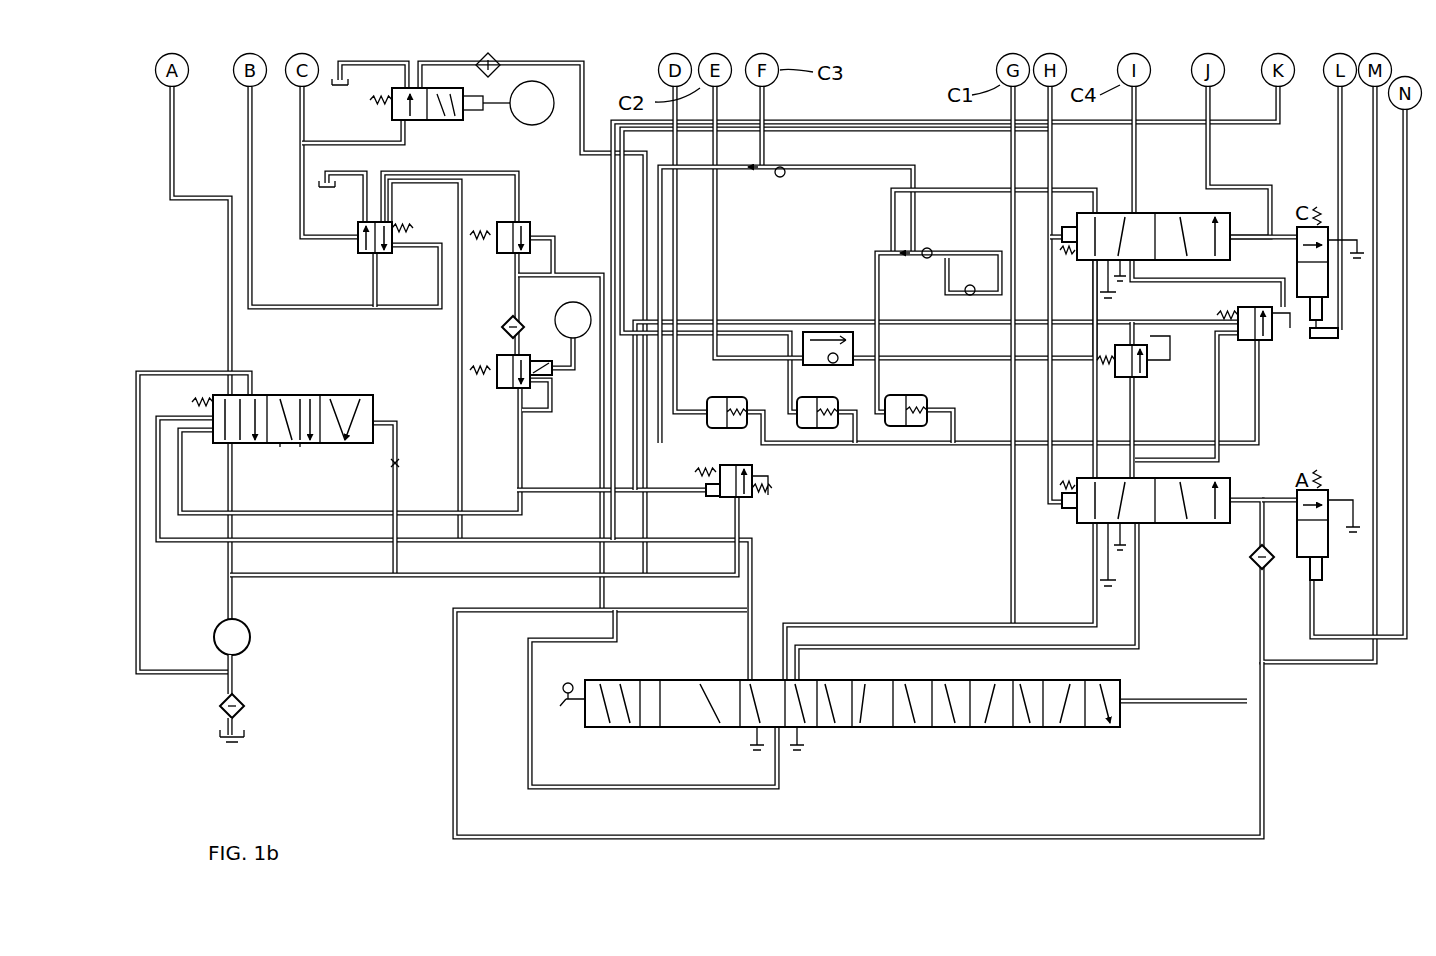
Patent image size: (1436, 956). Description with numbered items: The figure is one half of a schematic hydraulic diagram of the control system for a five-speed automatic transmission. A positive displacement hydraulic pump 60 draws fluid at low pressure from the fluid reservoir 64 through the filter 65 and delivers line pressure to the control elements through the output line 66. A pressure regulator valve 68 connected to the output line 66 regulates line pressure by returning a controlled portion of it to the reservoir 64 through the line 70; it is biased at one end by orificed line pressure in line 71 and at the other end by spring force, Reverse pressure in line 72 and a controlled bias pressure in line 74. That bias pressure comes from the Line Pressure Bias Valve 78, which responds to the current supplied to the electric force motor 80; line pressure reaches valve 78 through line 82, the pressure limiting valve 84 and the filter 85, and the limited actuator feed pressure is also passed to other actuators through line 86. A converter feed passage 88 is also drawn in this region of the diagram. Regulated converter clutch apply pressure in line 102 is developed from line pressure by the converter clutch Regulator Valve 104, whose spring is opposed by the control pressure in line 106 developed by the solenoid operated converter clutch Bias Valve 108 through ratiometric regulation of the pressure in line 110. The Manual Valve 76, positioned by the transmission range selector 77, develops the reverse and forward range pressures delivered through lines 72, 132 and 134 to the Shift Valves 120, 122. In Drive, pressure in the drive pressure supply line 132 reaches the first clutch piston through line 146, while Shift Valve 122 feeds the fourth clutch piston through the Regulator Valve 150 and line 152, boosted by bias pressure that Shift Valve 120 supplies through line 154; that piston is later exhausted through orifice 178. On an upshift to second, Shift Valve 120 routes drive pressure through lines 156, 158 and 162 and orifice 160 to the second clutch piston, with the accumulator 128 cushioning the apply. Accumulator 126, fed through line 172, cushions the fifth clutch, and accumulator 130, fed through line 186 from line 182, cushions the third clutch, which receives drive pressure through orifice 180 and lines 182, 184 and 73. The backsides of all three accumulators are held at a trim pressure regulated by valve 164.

The positive displacement hydraulic pump 60 is at (250, 637).
The fluid reservoir 64 is at (236, 740).
The filter 65 is at (246, 706).
The output line 66 is at (350, 603).
The pressure regulator valve 68 is at (295, 445).
The line 70 is at (140, 585).
The line 71 is at (383, 410).
The line 72 is at (292, 537).
The line 73 is at (765, 102).
The line 74 is at (330, 507).
The Manual Valve 76 is at (920, 727).
The transmission range selector 77 is at (557, 710).
The Line Pressure Bias Valve 78 is at (505, 390).
The electric force motor 80 is at (572, 372).
The line 82 is at (458, 343).
The pressure limiting valve 84 is at (507, 257).
The filter 85 is at (500, 328).
The line 86 is at (453, 700).
The converter feed passage 88 is at (227, 281).
The line 102 is at (245, 150).
The TCC Regulator Valve 104 is at (367, 257).
The line 106 is at (377, 140).
The TCC Bias Valve 108 is at (413, 123).
The line 110 is at (590, 110).
The Shift Valve 120 is at (1227, 477).
The Shift Valve 122 is at (1187, 213).
The accumulator 126 is at (738, 397).
The accumulator 128 is at (837, 425).
The accumulator 130 is at (913, 397).
The DR pressure supply line 132 is at (922, 625).
The line 134 is at (973, 627).
The line 146 is at (1010, 143).
The Regulator Valve 150 is at (1262, 345).
The line 152 is at (1127, 190).
The line 154 is at (1213, 378).
The line 156 is at (1090, 400).
The line 158 is at (985, 443).
The orifice 160 is at (827, 330).
The line 162 is at (720, 253).
The valve 164 is at (743, 500).
The line 172 is at (680, 190).
The orifice 178 is at (1127, 277).
The orifice 180 is at (940, 193).
The line 182 is at (1053, 270).
The line 184 is at (820, 167).
The line 186 is at (878, 273).